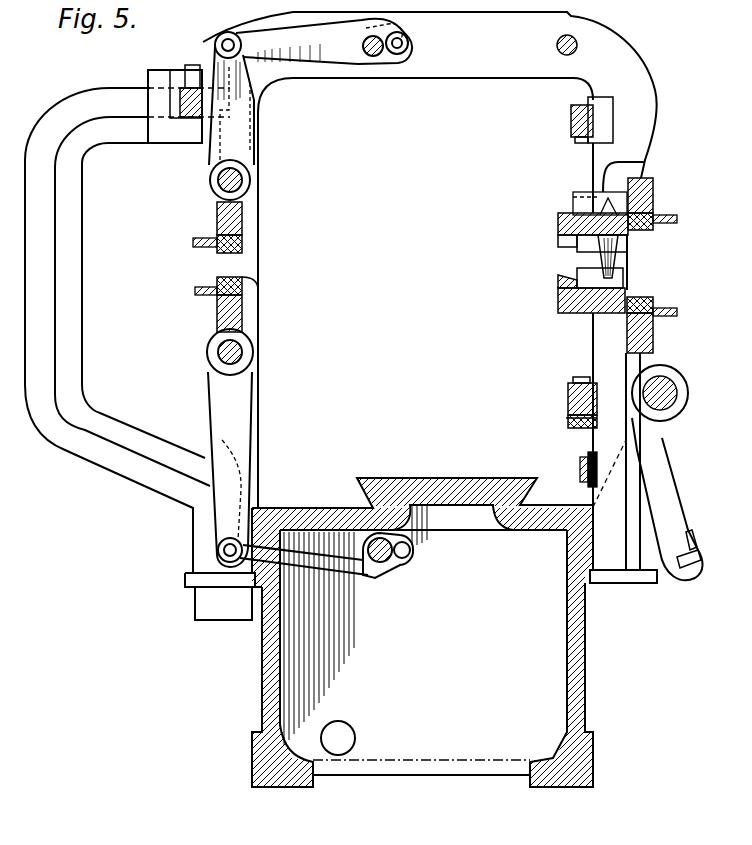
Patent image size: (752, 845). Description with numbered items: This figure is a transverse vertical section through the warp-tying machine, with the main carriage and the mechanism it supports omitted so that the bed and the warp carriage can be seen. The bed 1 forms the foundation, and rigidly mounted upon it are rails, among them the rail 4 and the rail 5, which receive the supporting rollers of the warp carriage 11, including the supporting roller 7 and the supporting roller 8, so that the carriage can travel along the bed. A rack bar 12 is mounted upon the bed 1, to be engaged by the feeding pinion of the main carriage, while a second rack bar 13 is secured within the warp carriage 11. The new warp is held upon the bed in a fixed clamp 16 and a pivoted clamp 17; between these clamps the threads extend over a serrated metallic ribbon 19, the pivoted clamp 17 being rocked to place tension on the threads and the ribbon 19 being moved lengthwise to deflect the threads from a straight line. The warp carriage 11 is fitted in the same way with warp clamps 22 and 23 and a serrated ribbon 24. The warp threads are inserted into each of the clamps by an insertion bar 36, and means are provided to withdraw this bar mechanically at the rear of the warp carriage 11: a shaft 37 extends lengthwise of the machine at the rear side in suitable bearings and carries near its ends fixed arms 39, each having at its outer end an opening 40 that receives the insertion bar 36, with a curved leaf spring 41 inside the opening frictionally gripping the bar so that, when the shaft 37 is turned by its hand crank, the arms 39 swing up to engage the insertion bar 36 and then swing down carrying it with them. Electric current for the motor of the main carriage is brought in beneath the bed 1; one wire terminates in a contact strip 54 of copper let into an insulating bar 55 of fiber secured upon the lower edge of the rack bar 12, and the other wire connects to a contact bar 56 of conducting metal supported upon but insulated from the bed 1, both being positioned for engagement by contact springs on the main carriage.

The bed 1 is at (262, 652).
The rail 4 is at (622, 272).
The rail 5 is at (180, 140).
The supporting roller 7 is at (190, 66).
The supporting roller 8 is at (617, 262).
The warp carriage 11 is at (643, 52).
The rack bar 12 is at (568, 399).
The rack bar 13 is at (571, 124).
The fixed clamp 16 is at (655, 345).
The pivoted clamp 17 is at (217, 319).
The serrated metallic ribbon 19 is at (560, 278).
The warp clamp 22 is at (656, 186).
The warp clamp 23 is at (217, 212).
The serrated ribbon 24 is at (568, 238).
The insertion bar 36 is at (193, 243).
The shaft 37 is at (674, 384).
The fixed arm 39 is at (680, 493).
The opening 40 is at (686, 564).
The curved leaf spring 41 is at (697, 546).
The contact strip 54 is at (577, 427).
The insulating bar 55 is at (568, 420).
The contact bar 56 is at (580, 464).